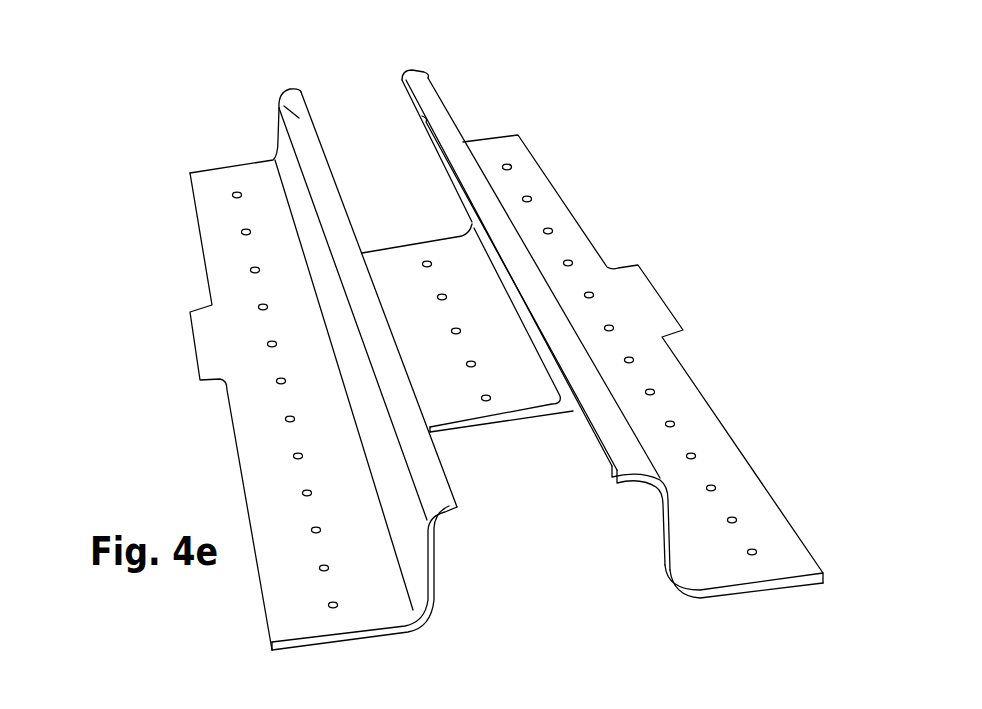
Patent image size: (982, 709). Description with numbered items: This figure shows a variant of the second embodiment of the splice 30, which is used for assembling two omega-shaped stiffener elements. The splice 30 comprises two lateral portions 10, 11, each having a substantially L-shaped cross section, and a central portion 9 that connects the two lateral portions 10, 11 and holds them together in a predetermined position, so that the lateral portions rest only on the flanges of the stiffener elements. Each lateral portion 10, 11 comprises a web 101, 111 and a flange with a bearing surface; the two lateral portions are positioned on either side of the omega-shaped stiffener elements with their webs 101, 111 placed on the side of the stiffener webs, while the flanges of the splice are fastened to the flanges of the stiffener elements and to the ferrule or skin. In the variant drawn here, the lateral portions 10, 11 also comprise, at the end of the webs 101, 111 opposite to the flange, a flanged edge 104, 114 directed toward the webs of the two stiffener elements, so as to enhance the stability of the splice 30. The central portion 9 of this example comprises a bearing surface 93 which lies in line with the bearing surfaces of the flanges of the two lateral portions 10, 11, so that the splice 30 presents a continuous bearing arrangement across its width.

The splice 30 is at (626, 162).
The lateral portion 10 is at (207, 275).
The web 101 is at (292, 93).
The flanged edge 104 is at (312, 127).
The central portion 9 is at (462, 388).
The bearing surface 93 is at (524, 418).
The flanged edge 114 is at (402, 74).
The lateral portion 11 is at (790, 520).
The web 111 is at (650, 518).